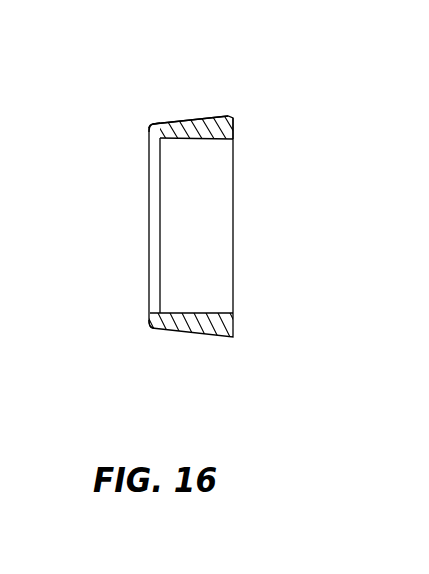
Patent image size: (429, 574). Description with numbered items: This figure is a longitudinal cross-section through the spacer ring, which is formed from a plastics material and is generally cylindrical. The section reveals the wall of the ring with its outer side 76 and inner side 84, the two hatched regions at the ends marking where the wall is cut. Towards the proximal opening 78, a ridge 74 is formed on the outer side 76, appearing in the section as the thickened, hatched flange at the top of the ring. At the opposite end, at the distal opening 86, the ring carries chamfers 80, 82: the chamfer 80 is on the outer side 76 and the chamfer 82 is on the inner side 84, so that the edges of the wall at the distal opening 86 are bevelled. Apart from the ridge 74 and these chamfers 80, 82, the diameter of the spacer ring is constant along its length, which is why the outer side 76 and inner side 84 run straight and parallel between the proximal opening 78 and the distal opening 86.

The ridge 74 is at (215, 121).
The outer side 76 is at (170, 120).
The proximal opening 78 is at (233, 223).
The chamfer 80 is at (150, 127).
The chamfer 82 is at (150, 138).
The inner side 84 is at (200, 140).
The distal opening 86 is at (148, 230).